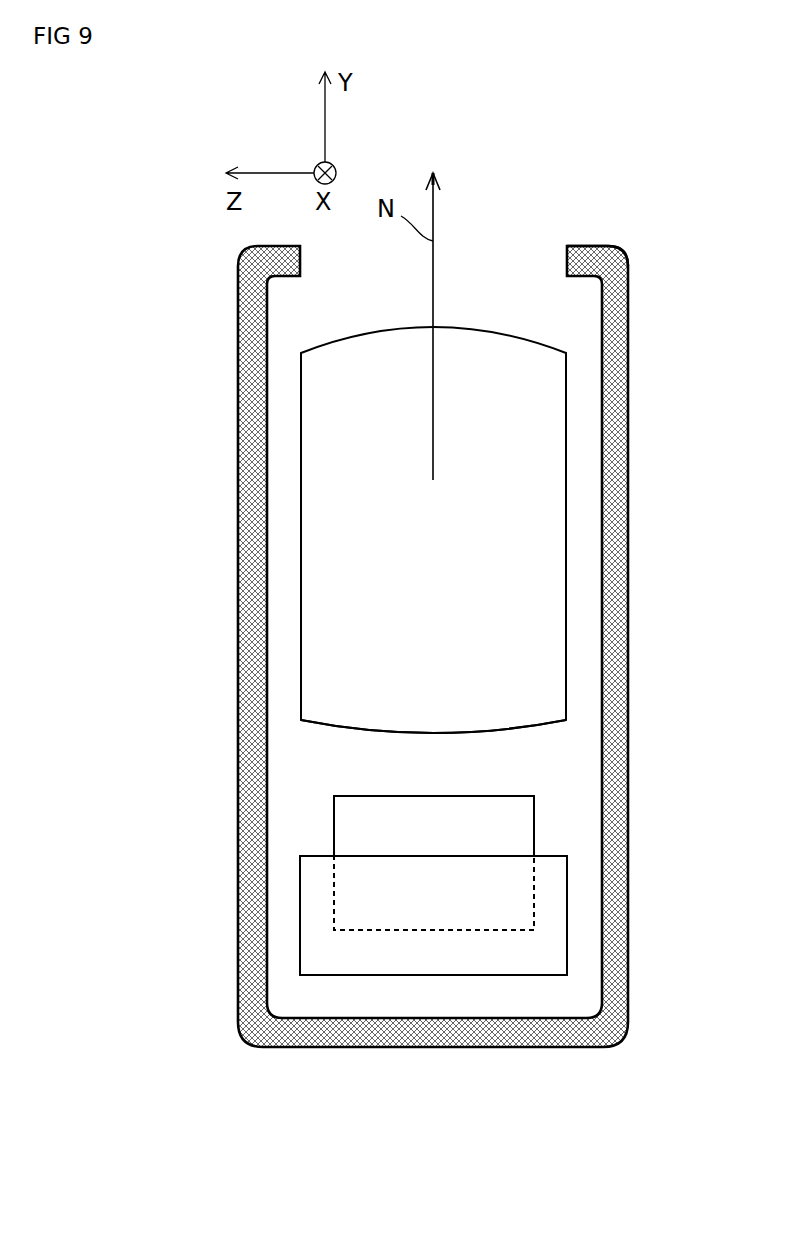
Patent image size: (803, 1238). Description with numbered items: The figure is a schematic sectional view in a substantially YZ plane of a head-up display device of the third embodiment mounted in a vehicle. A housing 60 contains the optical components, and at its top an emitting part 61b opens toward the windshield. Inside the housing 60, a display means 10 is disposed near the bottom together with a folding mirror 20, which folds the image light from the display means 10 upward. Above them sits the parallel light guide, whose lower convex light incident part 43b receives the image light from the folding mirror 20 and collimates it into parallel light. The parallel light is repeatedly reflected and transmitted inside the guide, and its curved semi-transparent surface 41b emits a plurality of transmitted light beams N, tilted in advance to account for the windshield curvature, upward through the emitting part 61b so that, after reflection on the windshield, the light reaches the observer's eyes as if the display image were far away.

The housing 60 is at (238, 620).
The emitting part 61b is at (549, 247).
The semi-transparent surface 41b is at (564, 550).
The light incident part 43b is at (566, 721).
The display means 10 is at (534, 830).
The folding mirror 20 is at (563, 910).